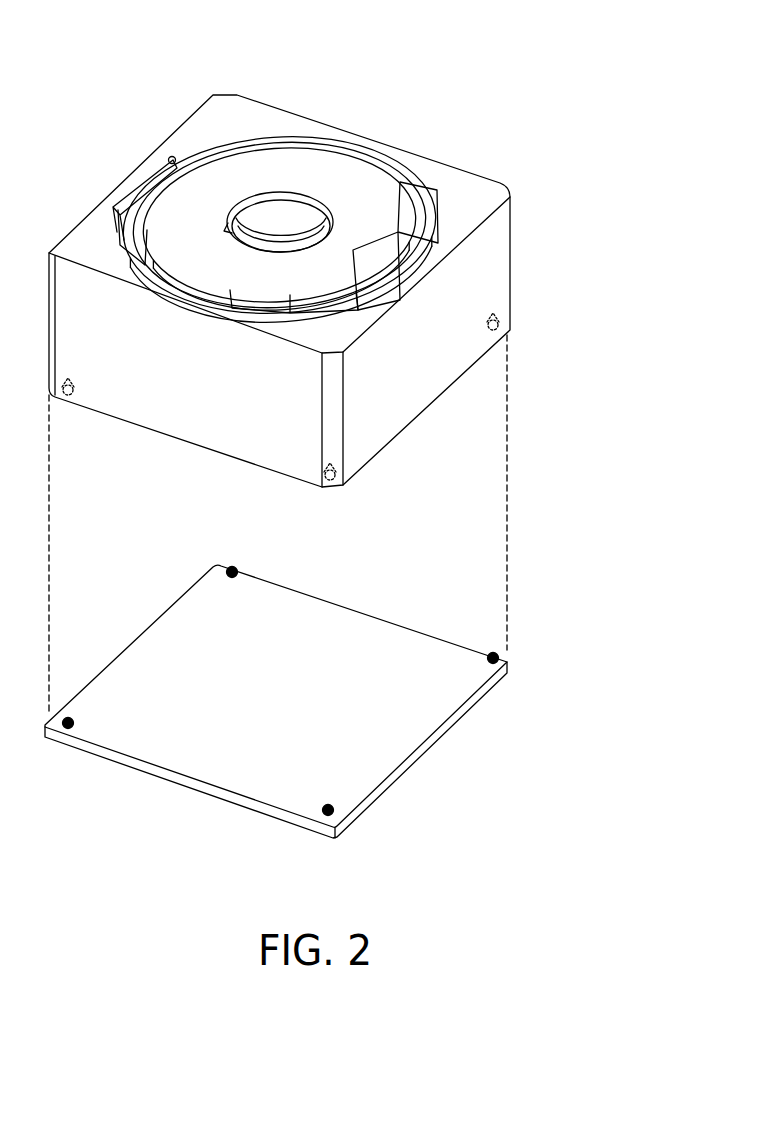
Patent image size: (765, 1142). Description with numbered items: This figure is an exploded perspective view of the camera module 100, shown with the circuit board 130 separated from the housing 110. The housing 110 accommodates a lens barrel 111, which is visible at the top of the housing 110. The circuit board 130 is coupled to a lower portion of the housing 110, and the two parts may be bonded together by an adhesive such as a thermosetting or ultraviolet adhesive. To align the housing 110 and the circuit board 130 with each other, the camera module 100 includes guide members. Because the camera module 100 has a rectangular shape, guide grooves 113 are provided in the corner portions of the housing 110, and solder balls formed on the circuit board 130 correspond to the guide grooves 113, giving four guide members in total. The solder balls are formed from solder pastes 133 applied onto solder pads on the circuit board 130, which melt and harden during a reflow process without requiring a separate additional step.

The camera module 100 is at (308, 38).
The housing 110 is at (503, 260).
The lens barrel 111 is at (335, 173).
The guide grooves 113 is at (498, 320).
The circuit board 130 is at (453, 728).
The solder pastes 133 is at (334, 806).